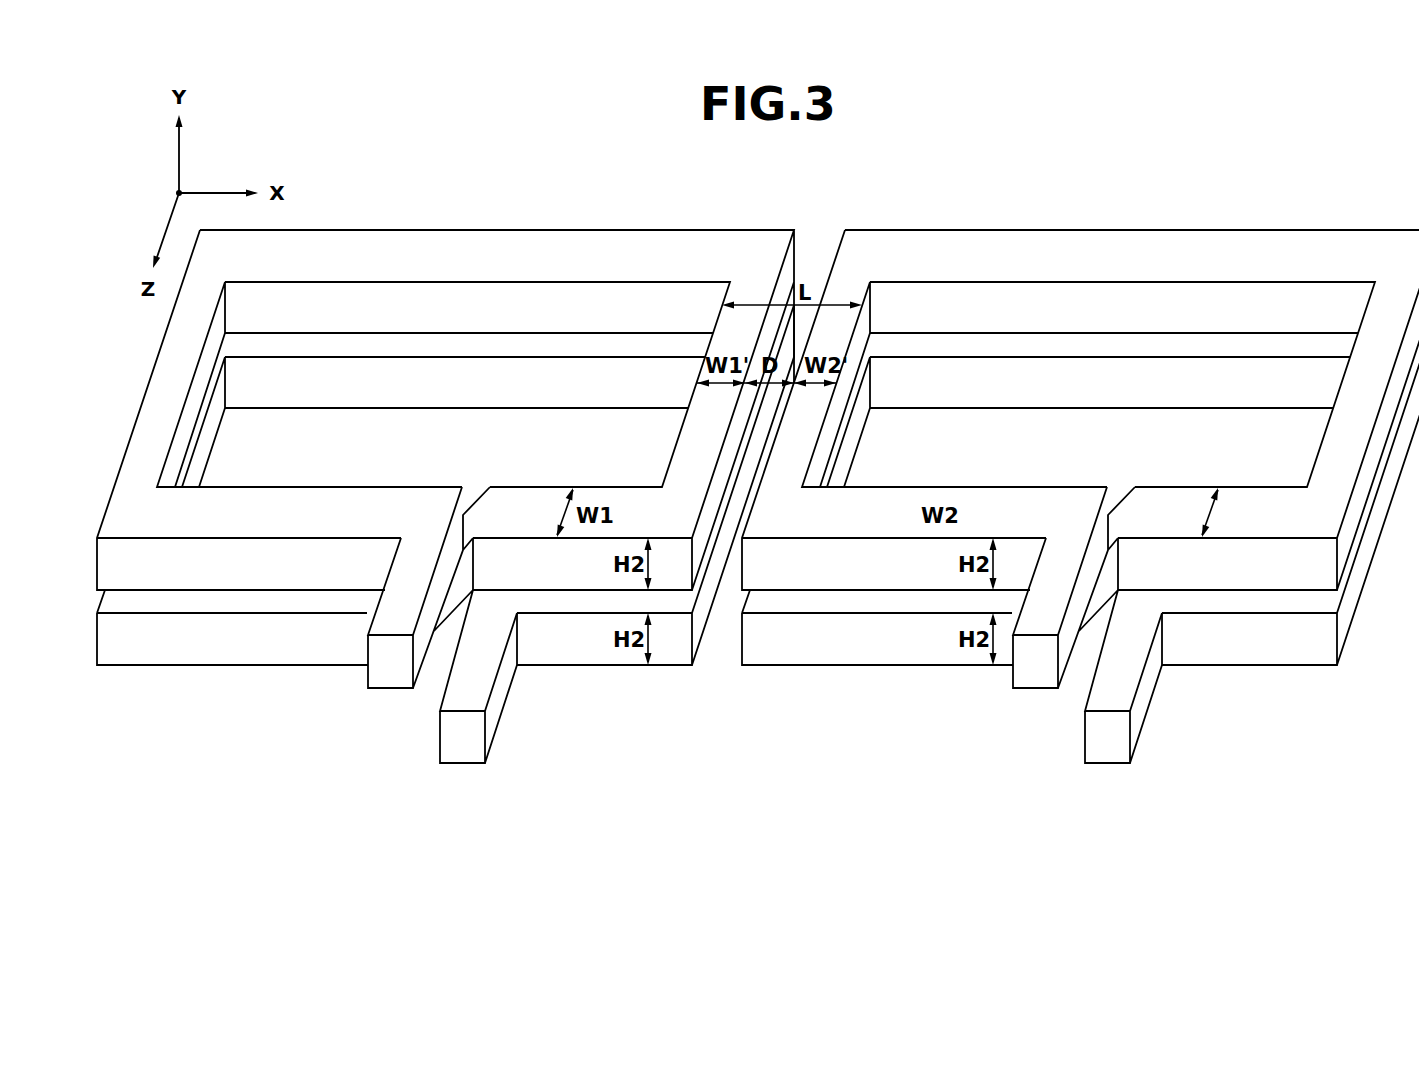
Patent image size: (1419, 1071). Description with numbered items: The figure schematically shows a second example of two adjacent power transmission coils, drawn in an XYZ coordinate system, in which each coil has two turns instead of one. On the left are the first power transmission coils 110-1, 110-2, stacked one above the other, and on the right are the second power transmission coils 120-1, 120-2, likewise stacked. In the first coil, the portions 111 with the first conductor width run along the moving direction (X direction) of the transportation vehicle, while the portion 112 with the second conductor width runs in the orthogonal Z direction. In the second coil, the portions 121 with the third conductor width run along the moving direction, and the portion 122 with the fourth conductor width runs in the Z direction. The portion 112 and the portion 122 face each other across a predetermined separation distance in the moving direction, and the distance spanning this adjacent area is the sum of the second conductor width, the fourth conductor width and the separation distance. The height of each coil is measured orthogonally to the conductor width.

The first power transmission coil 110-1 is at (352, 222).
The first power transmission coil 110-2 is at (272, 680).
The portions with first conductor width 111 is at (509, 240).
The portion with second conductor width 112 is at (678, 447).
The second power transmission coil 120-1 is at (1008, 222).
The second power transmission coil 120-2 is at (845, 680).
The portions with third conductor width 121 is at (1166, 240).
The portion with fourth conductor width 122 is at (805, 441).